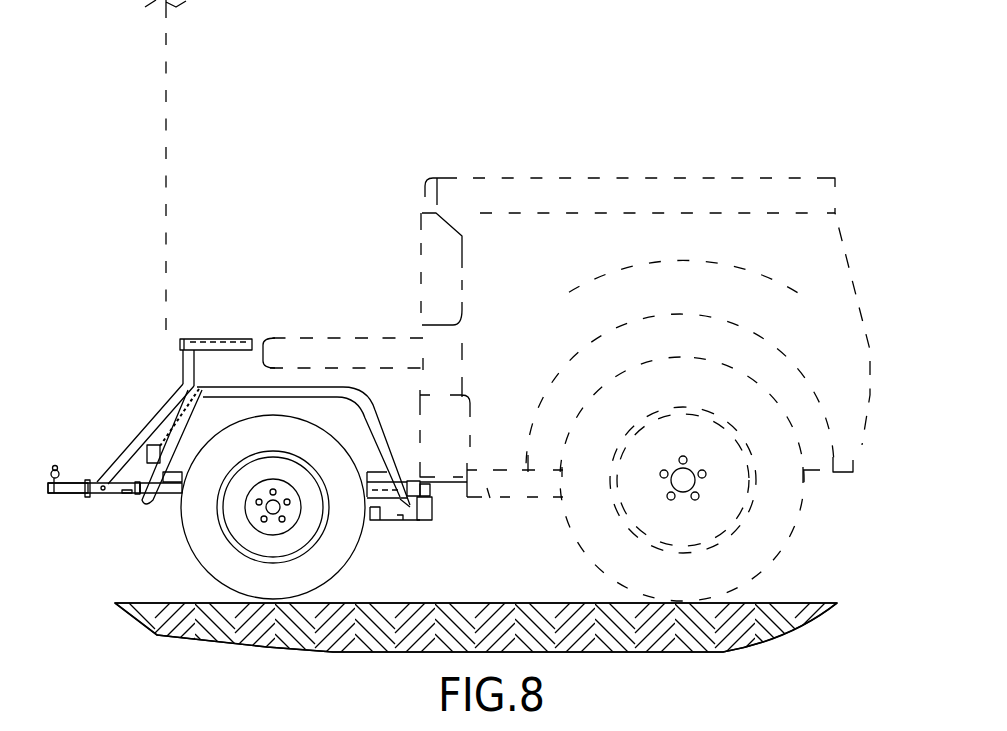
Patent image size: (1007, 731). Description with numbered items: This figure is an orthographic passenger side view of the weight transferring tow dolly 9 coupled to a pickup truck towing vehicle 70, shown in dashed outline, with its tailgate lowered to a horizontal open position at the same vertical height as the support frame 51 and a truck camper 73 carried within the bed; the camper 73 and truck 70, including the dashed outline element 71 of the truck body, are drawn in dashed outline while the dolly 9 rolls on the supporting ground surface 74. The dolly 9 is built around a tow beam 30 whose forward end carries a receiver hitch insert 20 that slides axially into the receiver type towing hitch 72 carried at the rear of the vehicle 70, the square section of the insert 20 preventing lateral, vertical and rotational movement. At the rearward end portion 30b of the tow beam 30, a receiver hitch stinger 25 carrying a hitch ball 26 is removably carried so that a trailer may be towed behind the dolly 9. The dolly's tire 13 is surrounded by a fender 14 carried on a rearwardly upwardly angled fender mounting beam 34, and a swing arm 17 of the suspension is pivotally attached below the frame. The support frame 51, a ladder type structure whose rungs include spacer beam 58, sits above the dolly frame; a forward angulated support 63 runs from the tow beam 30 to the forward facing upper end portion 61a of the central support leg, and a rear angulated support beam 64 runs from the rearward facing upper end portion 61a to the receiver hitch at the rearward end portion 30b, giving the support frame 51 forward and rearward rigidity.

The weight transferring tow dolly 9 is at (152, 323).
The tire 13 is at (233, 570).
The fender 14 is at (362, 400).
The swing arm 17 is at (380, 522).
The receiver hitch insert 20 is at (442, 495).
The receiver hitch stinger 25 is at (62, 495).
The hitch ball 26 is at (53, 470).
The tow beam 30 is at (170, 495).
The rearward end portion of tow beam 30b is at (88, 497).
The fender mounting beam 34 is at (418, 522).
The support frame 51 is at (226, 328).
The spacer beam 58 is at (214, 345).
The upper end portion of support leg 61a is at (183, 367).
The forward angulated support 63 is at (193, 393).
The rear angulated support beam 64 is at (127, 460).
The towing vehicle 70 is at (403, 168).
The hood 71 is at (353, 347).
The towing hitch 72 is at (503, 520).
The truck camper 73 is at (188, 88).
The supporting ground surface 74 is at (519, 583).